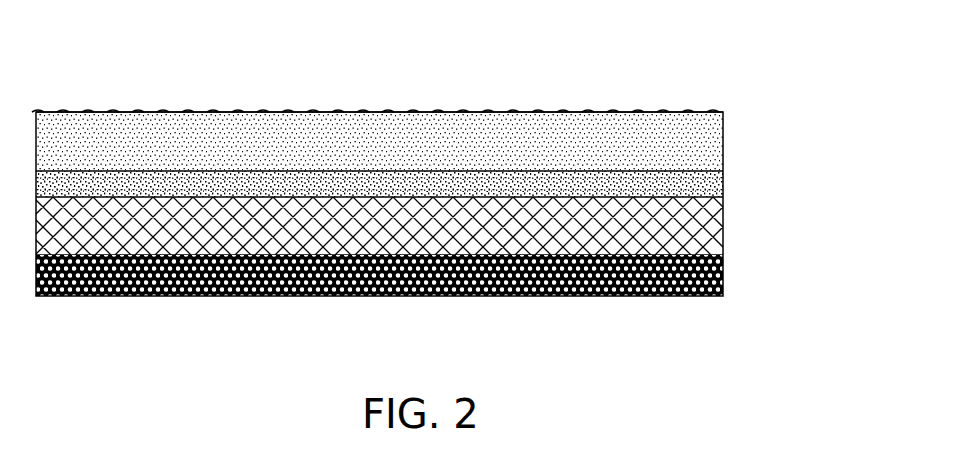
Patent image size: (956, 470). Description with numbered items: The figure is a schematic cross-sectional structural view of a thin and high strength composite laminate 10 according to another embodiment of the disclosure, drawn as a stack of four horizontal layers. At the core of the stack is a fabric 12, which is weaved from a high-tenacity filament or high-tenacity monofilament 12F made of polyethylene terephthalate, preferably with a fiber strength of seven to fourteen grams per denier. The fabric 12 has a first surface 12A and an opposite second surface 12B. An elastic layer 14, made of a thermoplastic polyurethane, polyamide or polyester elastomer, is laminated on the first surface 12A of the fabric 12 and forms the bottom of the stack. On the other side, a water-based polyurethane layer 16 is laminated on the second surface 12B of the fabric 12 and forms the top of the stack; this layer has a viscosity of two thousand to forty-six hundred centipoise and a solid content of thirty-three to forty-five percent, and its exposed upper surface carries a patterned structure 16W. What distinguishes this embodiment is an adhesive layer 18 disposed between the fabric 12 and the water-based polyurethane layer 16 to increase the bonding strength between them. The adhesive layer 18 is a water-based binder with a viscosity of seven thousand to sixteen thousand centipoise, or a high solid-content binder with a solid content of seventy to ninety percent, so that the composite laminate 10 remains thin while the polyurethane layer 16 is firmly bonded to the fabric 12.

The thin and high strength composite laminate 10 is at (408, 360).
The fabric 12 is at (723, 236).
The high-tenacity filament or high-tenacity monofilament 12F is at (708, 217).
The first surface 12A is at (628, 255).
The second surface 12B is at (691, 197).
The elastic layer 14 is at (723, 278).
The water-based polyurethane layer 16 is at (723, 140).
The patterned structure 16W is at (509, 107).
The adhesive layer 18 is at (723, 182).